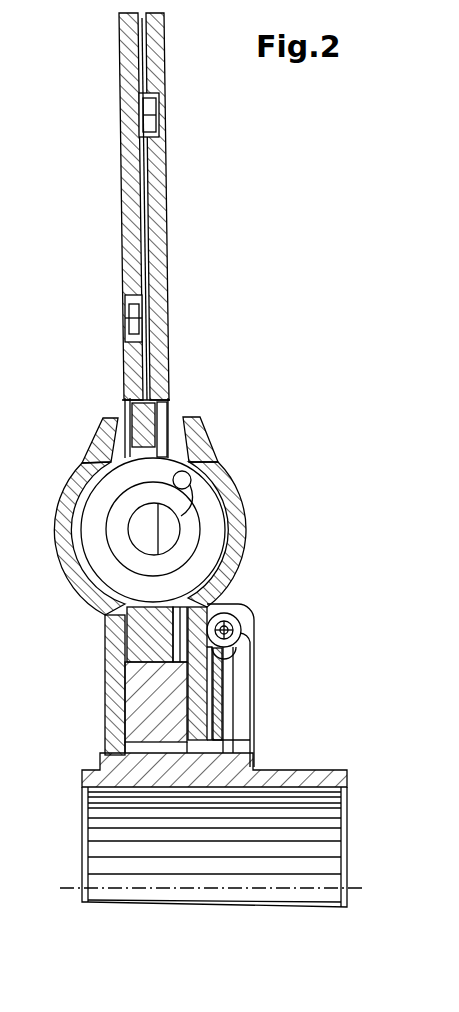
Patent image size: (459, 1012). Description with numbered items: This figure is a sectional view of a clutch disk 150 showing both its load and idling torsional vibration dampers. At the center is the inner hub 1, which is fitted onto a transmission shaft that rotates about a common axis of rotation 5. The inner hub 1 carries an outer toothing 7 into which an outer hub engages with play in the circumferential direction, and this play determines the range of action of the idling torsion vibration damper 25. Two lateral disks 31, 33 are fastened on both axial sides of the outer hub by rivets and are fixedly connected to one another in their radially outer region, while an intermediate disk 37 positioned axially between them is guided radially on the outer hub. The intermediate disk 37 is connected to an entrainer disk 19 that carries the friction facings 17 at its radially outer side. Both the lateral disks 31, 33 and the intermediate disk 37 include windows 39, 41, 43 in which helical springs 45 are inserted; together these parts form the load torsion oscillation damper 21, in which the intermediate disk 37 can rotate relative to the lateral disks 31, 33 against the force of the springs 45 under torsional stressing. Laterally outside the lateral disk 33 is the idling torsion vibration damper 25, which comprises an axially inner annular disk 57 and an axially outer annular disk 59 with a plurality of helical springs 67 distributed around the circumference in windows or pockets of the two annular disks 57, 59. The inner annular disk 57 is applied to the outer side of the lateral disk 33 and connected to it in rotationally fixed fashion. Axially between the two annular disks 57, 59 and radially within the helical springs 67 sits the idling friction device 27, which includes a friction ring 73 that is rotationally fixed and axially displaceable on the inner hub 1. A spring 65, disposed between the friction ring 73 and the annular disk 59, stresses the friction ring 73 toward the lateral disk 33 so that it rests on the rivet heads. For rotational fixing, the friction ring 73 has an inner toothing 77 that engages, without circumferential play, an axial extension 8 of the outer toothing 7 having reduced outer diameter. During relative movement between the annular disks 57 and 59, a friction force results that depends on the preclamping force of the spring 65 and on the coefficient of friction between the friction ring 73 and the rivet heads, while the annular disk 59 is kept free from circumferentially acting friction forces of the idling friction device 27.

The inner hub 1 is at (335, 770).
The axis of rotation 5 is at (65, 888).
The outer toothing 7 is at (127, 740).
The axial extension of the outer toothing 8 is at (200, 747).
The friction facings 17 is at (166, 23).
The entrainer disk 19 is at (167, 221).
The load torsion oscillation damper 21 is at (215, 427).
The idling torsion vibration damper 25 is at (263, 601).
The idling friction device 27 is at (127, 677).
The lateral disk 31 is at (75, 478).
The lateral disk 33 is at (227, 480).
The intermediate disk 37 is at (120, 628).
The window 39 is at (143, 538).
The window 41 is at (107, 452).
The window 43 is at (190, 458).
The helical springs 45 is at (195, 523).
The axially inner annular disk 57 is at (243, 733).
The axially outer annular disk 59 is at (243, 660).
The spring 65 is at (228, 703).
The helical springs 67 is at (248, 628).
The friction ring 73 is at (222, 683).
The inner toothing 77 is at (225, 760).
The clutch disk 150 is at (254, 225).